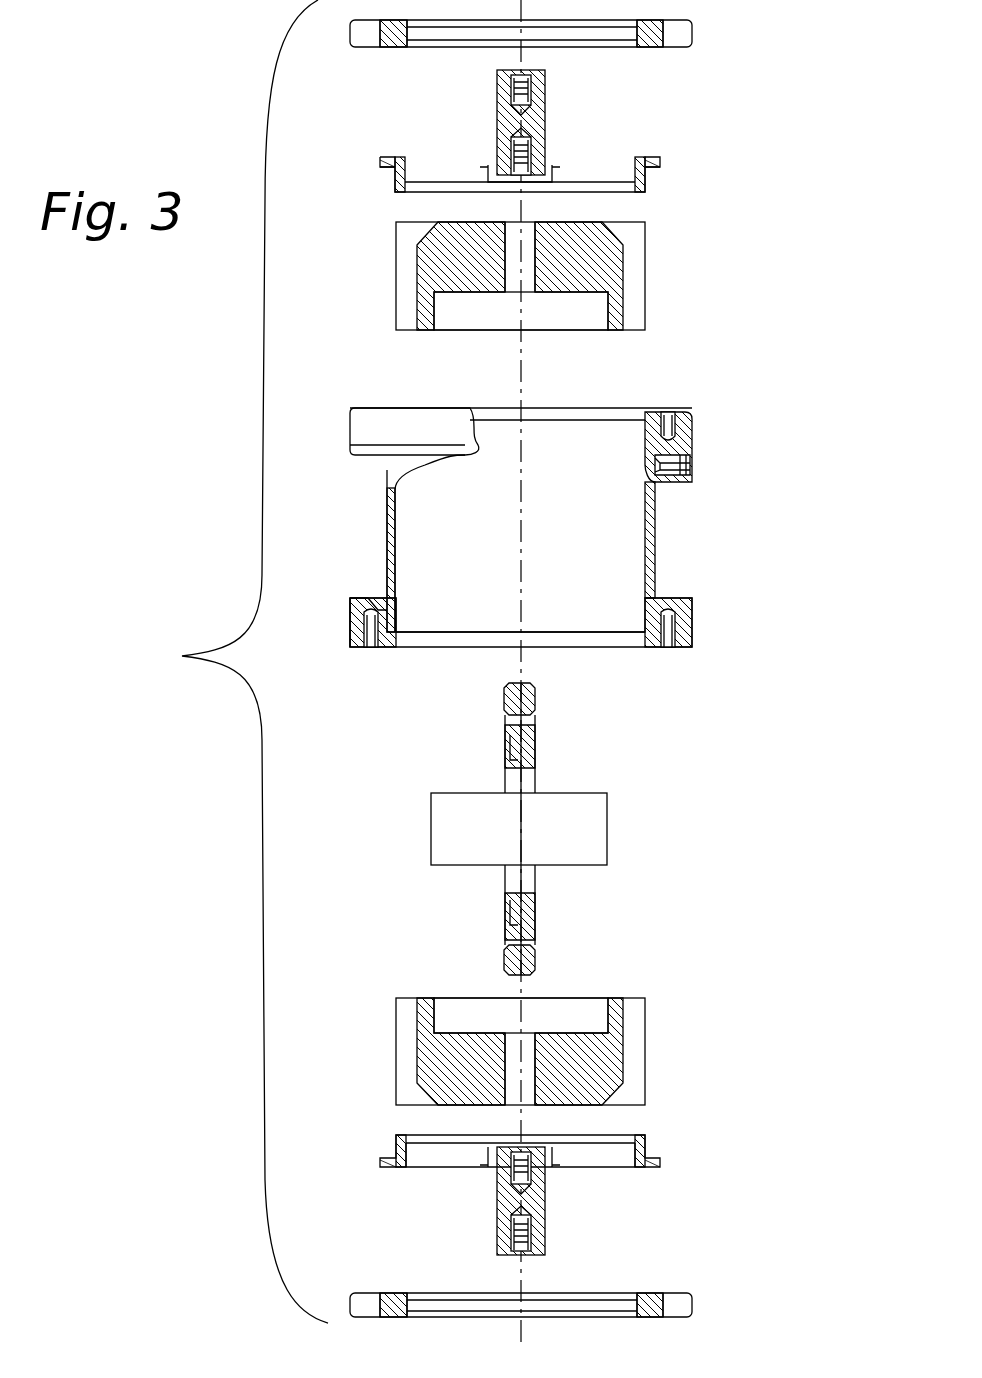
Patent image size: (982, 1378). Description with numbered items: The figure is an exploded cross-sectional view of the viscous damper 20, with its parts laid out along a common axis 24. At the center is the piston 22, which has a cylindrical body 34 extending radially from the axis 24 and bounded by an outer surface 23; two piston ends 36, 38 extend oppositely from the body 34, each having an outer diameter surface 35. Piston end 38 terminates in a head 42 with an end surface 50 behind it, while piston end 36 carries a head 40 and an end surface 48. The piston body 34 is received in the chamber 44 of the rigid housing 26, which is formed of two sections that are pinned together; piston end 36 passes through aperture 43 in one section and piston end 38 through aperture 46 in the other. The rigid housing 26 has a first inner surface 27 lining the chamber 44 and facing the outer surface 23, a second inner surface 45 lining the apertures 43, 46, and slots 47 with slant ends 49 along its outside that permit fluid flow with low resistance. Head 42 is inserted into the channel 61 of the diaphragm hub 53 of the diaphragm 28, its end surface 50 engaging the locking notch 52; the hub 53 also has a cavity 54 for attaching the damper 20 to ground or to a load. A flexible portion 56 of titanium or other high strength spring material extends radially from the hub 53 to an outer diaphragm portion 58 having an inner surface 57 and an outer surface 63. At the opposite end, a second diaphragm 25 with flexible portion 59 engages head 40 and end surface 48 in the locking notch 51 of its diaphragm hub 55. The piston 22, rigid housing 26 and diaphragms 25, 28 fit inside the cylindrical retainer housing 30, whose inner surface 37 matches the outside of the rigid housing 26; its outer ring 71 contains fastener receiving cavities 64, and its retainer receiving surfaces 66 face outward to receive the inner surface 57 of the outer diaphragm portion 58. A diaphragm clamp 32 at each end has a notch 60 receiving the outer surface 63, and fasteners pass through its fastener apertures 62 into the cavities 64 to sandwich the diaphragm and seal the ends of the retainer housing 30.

The viscous damper 20 is at (228, 661).
The piston 22 is at (572, 826).
The outer surface 23 is at (431, 850).
The axis 24 is at (519, 555).
The second diaphragm 25 is at (601, 145).
The rigid housing 26 is at (579, 664).
The first inner surface 27 is at (605, 330).
The diaphragm 28 is at (592, 1188).
The retainer housing 30 is at (556, 536).
The diaphragm clamp 32 is at (617, 684).
The cylindrical body 34 is at (563, 816).
The outer diameter surface 35 is at (535, 768).
The piston end 36 is at (515, 787).
The inner surface 37 is at (650, 530).
The piston end 38 is at (512, 885).
The head 40 is at (505, 705).
The head 42 is at (507, 958).
The aperture 43 is at (530, 275).
The chamber 44 is at (490, 328).
The second inner surface 45 is at (521, 330).
The aperture 46 is at (528, 1070).
The slots 47 is at (408, 256).
The end surface 48 is at (532, 722).
The slant ends 49 is at (420, 1096).
The end surface 50 is at (535, 945).
The locking notch 51 is at (535, 168).
The locking notch 52 is at (545, 1165).
The diaphragm hub 53 is at (497, 1212).
The cavity 54 is at (515, 1245).
The diaphragm hub 55 is at (497, 110).
The flexible portion 56 is at (425, 1150).
The inner surface 57 is at (665, 1160).
The outer diaphragm portion 58 is at (392, 1167).
The flexible portion 59 is at (610, 178).
The notch 60 is at (588, 1293).
The channel 61 is at (545, 1195).
The fastener apertures 62 is at (368, 37).
The outer surface 63 is at (660, 1167).
The fastener receiving cavities 64 is at (682, 462).
The retainer receiving surfaces 66 is at (672, 418).
The outer ring 71 is at (380, 466).